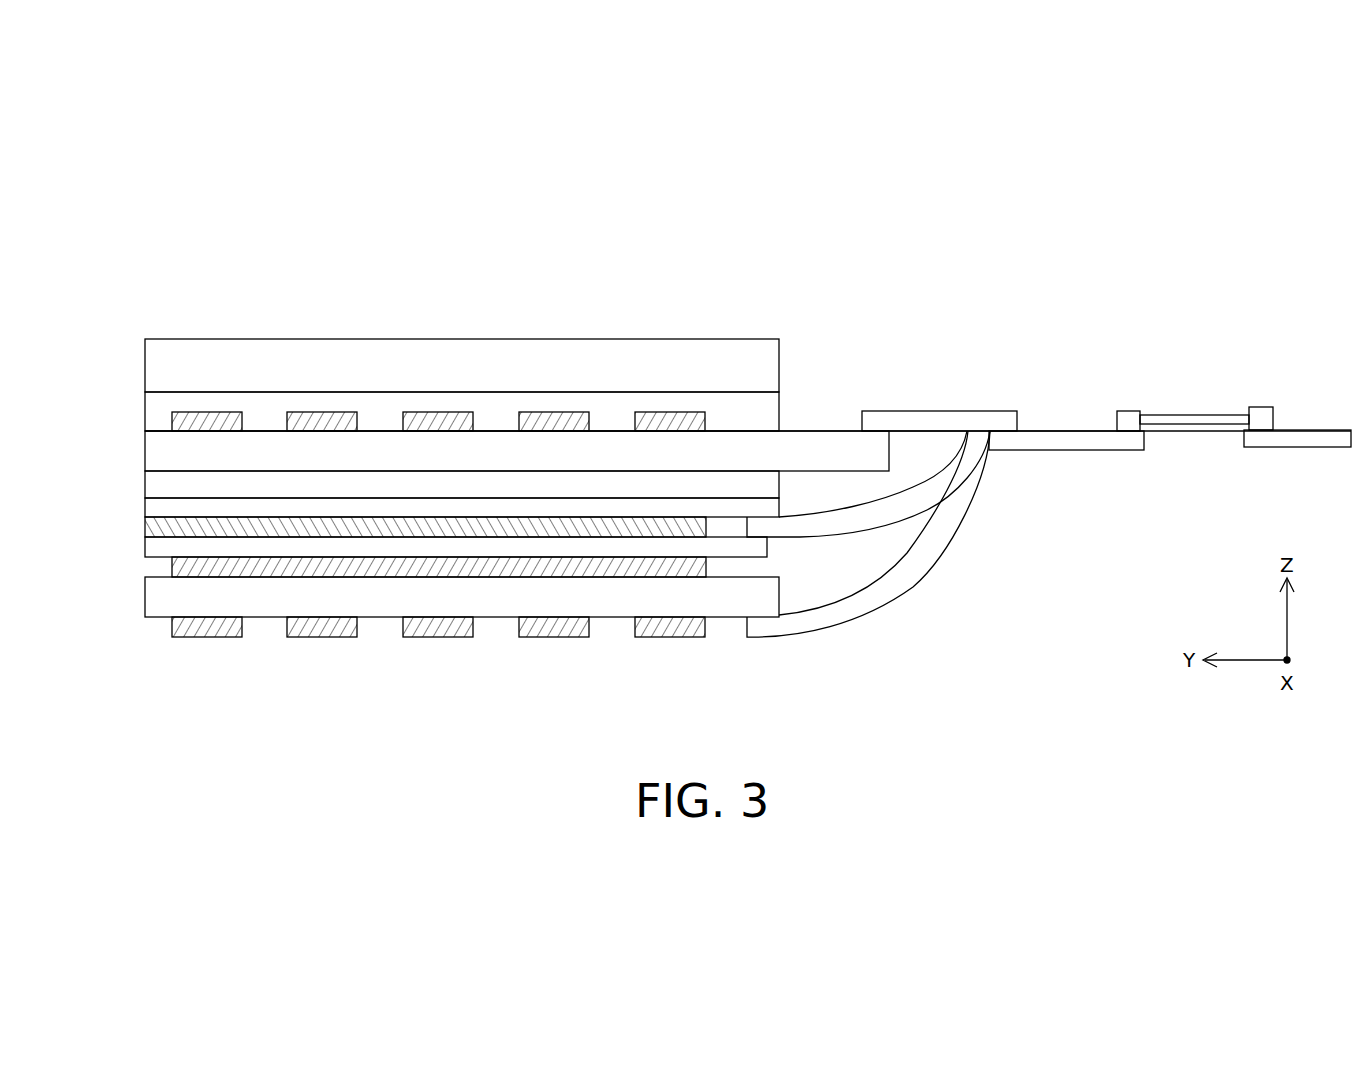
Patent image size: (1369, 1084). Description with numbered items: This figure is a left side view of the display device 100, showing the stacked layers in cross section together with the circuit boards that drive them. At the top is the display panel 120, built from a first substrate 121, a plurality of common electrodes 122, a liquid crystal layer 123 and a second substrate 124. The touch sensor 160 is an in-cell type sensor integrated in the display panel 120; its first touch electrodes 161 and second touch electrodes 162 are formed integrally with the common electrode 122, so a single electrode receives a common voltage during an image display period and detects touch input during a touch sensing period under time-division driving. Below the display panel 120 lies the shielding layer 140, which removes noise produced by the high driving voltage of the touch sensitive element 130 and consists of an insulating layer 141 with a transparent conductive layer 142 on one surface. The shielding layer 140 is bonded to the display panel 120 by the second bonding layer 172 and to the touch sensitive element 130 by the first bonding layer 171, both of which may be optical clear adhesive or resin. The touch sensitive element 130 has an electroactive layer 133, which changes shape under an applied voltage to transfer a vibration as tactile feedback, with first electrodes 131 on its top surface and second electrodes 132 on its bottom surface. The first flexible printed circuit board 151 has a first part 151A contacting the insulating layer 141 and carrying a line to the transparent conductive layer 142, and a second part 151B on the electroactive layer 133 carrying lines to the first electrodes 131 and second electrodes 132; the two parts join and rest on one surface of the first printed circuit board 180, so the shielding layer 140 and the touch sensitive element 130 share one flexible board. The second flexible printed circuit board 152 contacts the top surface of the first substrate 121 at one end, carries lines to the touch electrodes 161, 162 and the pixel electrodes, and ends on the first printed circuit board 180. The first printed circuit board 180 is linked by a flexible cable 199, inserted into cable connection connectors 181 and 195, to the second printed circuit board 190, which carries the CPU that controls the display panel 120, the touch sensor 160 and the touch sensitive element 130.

The display device 100 is at (1312, 265).
The display panel 120 is at (79, 348).
The first substrate 121 is at (159, 457).
The common electrode 122 is at (310, 422).
The liquid crystal layer 123 is at (159, 396).
The second substrate 124 is at (159, 352).
The touch sensitive element 130 is at (79, 582).
The first electrodes 131 is at (172, 562).
The second electrodes 132 is at (312, 627).
The electroactive layer 133 is at (159, 604).
The shielding layer 140 is at (79, 497).
The insulating layer 141 is at (159, 498).
The transparent conductive layer 142 is at (159, 522).
The first flexible printed circuit board 151 is at (1053, 475).
The first part 151A is at (927, 522).
The second part 151B is at (947, 478).
The second flexible printed circuit board 152 is at (930, 422).
The touch sensor 160 is at (540, 268).
The first touch electrodes 161 is at (378, 343).
The second touch electrodes 162 is at (498, 344).
The first bonding layer 171 is at (159, 545).
The second bonding layer 172 is at (159, 475).
The first printed circuit board 180 is at (1077, 440).
The connector 181 is at (1129, 416).
The second printed circuit board 190 is at (1318, 437).
The connector 195 is at (1262, 414).
The flexible cable 199 is at (1205, 420).